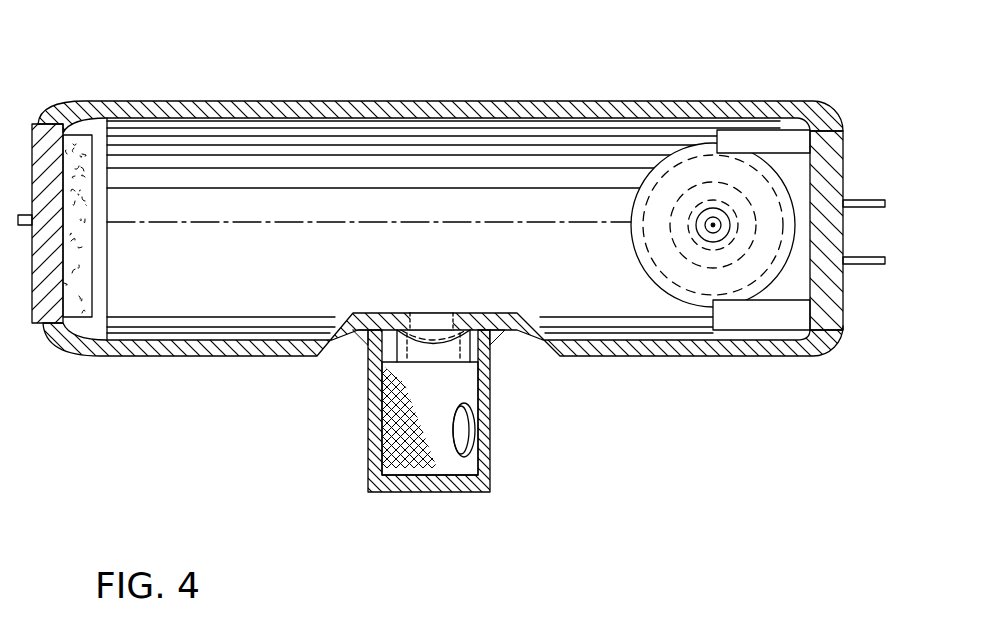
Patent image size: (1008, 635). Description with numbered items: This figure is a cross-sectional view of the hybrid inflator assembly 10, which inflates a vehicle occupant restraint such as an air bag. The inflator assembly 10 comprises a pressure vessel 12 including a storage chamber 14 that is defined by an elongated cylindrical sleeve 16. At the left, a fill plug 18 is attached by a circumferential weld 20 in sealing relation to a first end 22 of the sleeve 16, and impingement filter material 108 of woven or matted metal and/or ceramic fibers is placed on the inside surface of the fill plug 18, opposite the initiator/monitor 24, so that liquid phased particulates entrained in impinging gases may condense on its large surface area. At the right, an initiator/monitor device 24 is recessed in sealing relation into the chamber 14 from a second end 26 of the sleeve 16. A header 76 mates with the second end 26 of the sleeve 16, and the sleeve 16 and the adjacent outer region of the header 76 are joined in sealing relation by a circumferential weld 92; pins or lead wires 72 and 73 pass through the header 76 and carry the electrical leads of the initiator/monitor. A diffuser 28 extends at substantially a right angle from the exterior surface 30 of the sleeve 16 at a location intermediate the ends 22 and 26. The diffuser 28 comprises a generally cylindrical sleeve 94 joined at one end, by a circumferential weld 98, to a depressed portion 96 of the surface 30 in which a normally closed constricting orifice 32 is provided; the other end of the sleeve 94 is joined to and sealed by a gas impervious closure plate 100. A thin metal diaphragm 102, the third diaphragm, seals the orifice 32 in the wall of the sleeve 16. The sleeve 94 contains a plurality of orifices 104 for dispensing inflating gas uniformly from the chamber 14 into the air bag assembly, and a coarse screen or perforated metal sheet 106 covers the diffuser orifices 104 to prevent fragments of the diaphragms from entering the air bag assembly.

The hybrid inflator assembly 10 is at (466, 95).
The pressure vessel 12 is at (440, 85).
The storage chamber 14 is at (406, 138).
The elongated cylindrical sleeve 16 is at (440, 85).
The fill plug 18 is at (42, 125).
The circumferential weld 20 is at (45, 333).
The first end of sleeve 22 is at (440, 85).
The initiator/monitor device 24 is at (643, 250).
The second end of sleeve 26 is at (800, 117).
The diffuser 28 is at (426, 436).
The exterior surface of sleeve 30 is at (443, 362).
The constricting orifice 32 is at (445, 322).
The pin or lead wire 72 is at (858, 198).
The pin or lead wire 73 is at (863, 267).
The header 76 is at (841, 155).
The circumferential weld 92 is at (822, 343).
The cylindrical sleeve of diffuser 94 is at (410, 436).
The depressed portion of surface 96 is at (337, 350).
The circumferential weld 98 is at (507, 353).
The gas impervious closure plate 100 is at (463, 493).
The thin metal diaphragm 102 is at (370, 387).
The diffuser orifices 104 is at (466, 430).
The coarse screen 106 is at (415, 450).
The impingement filter material 108 is at (88, 265).